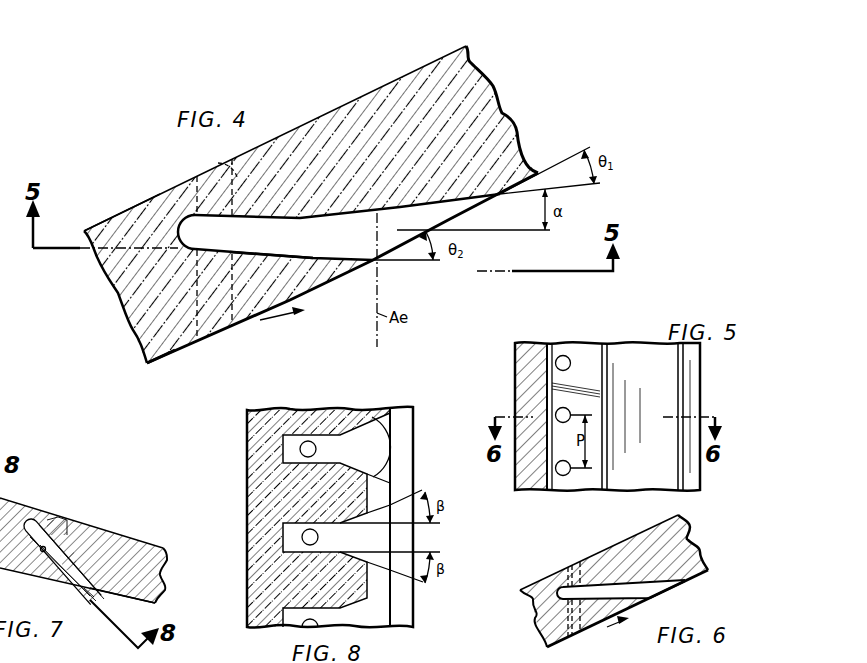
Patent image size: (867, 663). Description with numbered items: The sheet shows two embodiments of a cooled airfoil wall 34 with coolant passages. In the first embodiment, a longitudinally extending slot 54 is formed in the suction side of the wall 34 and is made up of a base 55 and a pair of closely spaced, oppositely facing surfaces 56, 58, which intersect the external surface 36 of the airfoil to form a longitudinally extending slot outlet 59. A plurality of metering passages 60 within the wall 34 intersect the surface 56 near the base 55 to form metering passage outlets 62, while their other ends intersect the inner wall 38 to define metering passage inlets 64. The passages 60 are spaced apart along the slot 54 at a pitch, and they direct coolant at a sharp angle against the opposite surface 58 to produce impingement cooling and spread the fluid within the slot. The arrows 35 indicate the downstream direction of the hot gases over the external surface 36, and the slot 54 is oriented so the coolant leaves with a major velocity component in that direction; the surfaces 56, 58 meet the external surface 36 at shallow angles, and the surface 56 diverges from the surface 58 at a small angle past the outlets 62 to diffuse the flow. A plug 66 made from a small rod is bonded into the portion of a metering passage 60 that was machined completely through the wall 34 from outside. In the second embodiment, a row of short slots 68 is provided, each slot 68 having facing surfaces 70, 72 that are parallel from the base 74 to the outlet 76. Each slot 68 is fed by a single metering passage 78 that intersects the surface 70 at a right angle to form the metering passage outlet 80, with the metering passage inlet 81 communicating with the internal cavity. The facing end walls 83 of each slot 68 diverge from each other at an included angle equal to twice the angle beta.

In FIG. 4, the airfoil wall 34 is at (478, 97).
In FIG. 7, the airfoil wall 34 is at (152, 568).
In FIG. 4, the arrows 35 is at (285, 322).
In FIG. 6, the arrows 35 is at (612, 628).
In FIG. 4, the external surface 36 is at (167, 362).
In FIG. 6, the external surface 36 is at (700, 572).
In FIG. 4, the inner wall 38 is at (137, 204).
In FIG. 6, the inner wall 38 is at (543, 582).
In FIG. 4, the slot 54 is at (363, 250).
In FIG. 6, the slot 54 is at (648, 594).
In FIG. 4, the base 55 is at (182, 226).
In FIG. 5, the base 55 is at (552, 354).
In FIG. 4, the surface 56 is at (455, 201).
In FIG. 5, the surface 56 is at (670, 449).
In FIG. 4, the surface 58 is at (280, 252).
In FIG. 4, the slot outlet 59 is at (418, 259).
In FIG. 4, the metering passages 60 is at (220, 165).
In FIG. 6, the metering passages 60 is at (579, 565).
In FIG. 5, the metering passage outlets 62 is at (571, 363).
In FIG. 6, the metering passage inlets 64 is at (572, 566).
In FIG. 6, the plug 66 is at (574, 634).
In FIG. 7, the slots 68 is at (85, 589).
In FIG. 7, the surface 70 is at (80, 573).
In FIG. 8, the surface 70 is at (382, 548).
In FIG. 7, the surface 72 is at (45, 555).
In FIG. 7, the base 74 is at (33, 522).
In FIG. 7, the outlet 76 is at (100, 602).
In FIG. 7, the metering passage 78 is at (67, 522).
In FIG. 8, the metering passage outlet 80 is at (316, 449).
In FIG. 7, the metering passage inlet 81 is at (67, 520).
In FIG. 8, the end walls 83 is at (390, 447).